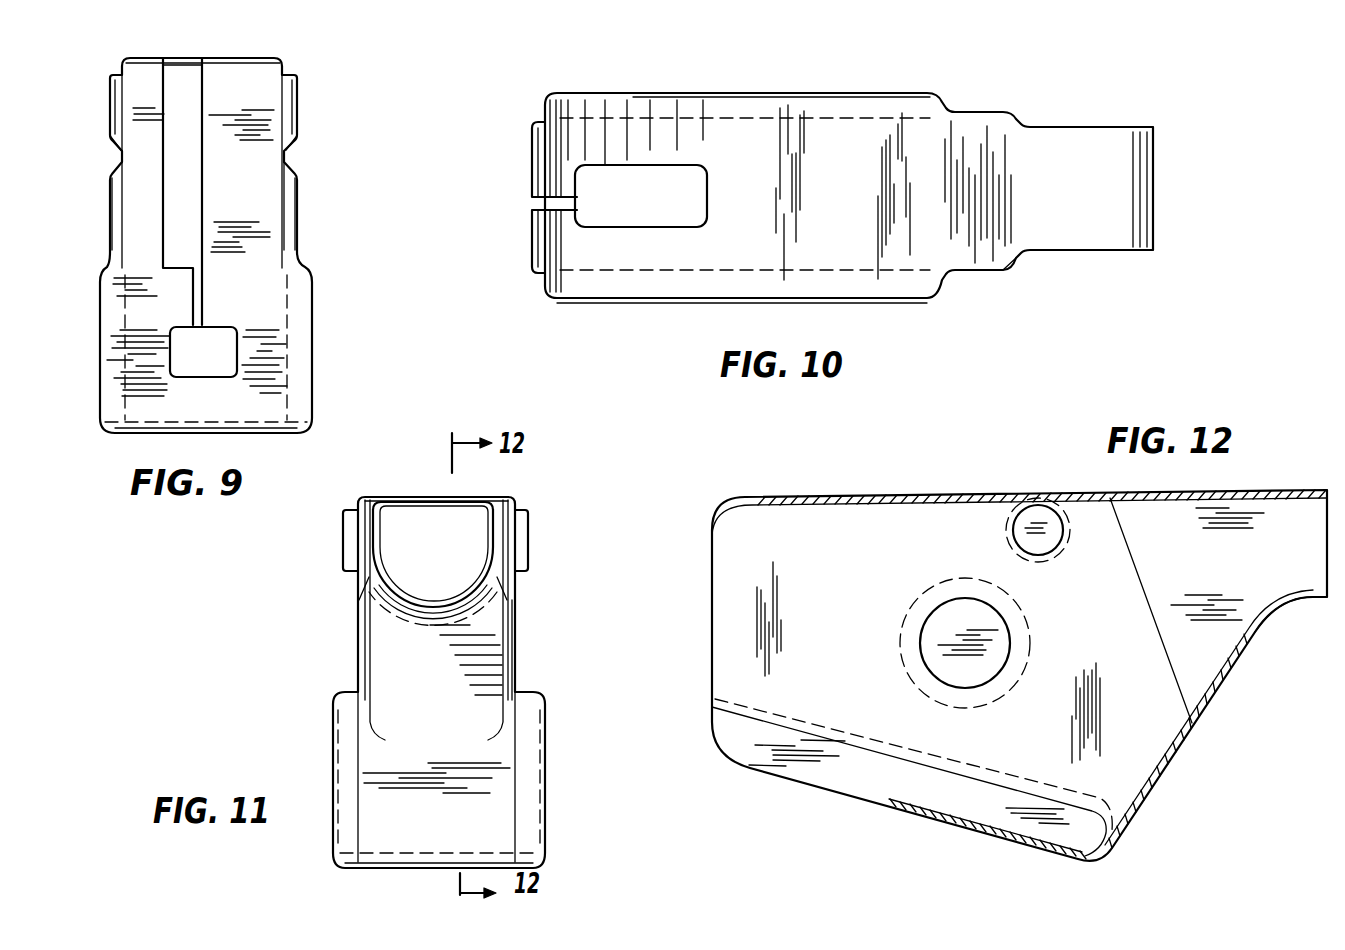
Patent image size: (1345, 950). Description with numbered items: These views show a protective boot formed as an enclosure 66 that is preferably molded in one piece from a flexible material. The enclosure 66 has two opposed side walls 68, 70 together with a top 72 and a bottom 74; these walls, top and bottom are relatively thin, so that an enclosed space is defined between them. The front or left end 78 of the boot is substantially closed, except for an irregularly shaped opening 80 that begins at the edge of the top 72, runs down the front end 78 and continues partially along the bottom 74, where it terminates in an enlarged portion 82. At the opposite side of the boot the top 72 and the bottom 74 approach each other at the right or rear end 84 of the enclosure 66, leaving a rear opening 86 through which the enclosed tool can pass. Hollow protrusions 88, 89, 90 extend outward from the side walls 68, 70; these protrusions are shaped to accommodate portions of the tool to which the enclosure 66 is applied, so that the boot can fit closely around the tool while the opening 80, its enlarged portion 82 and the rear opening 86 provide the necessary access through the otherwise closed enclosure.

In FIG. 9, the enclosure 66 is at (278, 60).
In FIG. 10, the enclosure 66 is at (1111, 110).
In FIG. 11, the enclosure 66 is at (362, 496).
In FIG. 12, the enclosure 66 is at (791, 482).
In FIG. 9, the side wall 68 is at (117, 188).
In FIG. 10, the side wall 68 is at (990, 272).
In FIG. 11, the side wall 68 is at (515, 665).
In FIG. 9, the side wall 70 is at (284, 196).
In FIG. 10, the side wall 70 is at (975, 112).
In FIG. 11, the side wall 70 is at (358, 677).
In FIG. 9, the top 72 is at (238, 52).
In FIG. 11, the top 72 is at (425, 497).
In FIG. 12, the top 72 is at (935, 497).
In FIG. 9, the bottom 74 is at (240, 420).
In FIG. 10, the bottom 74 is at (1066, 209).
In FIG. 11, the bottom 74 is at (430, 868).
In FIG. 12, the bottom 74 is at (960, 830).
In FIG. 9, the front end 78 is at (259, 203).
In FIG. 10, the front end 78 is at (538, 240).
In FIG. 12, the front end 78 is at (712, 610).
In FIG. 9, the irregularly shaped opening 80 is at (193, 92).
In FIG. 12, the irregularly shaped opening 80 is at (730, 673).
In FIG. 9, the enlarged portion 82 is at (225, 358).
In FIG. 10, the enlarged portion 82 is at (598, 183).
In FIG. 12, the enlarged portion 82 is at (843, 778).
In FIG. 10, the rear end 84 is at (1160, 237).
In FIG. 12, the rear end 84 is at (1327, 492).
In FIG. 11, the rear opening 86 is at (458, 522).
In FIG. 12, the rear opening 86 is at (1315, 597).
In FIG. 9, the hollow protrusion 88 is at (112, 88).
In FIG. 11, the hollow protrusion 88 is at (343, 560).
In FIG. 12, the hollow protrusion 88 is at (1040, 530).
In FIG. 9, the hollow protrusion 89 is at (112, 243).
In FIG. 11, the hollow protrusion 89 is at (362, 648).
In FIG. 12, the hollow protrusion 89 is at (990, 652).
In FIG. 9, the hollow protrusion 90 is at (100, 368).
In FIG. 10, the hollow protrusion 90 is at (786, 94).
In FIG. 11, the hollow protrusion 90 is at (333, 737).
In FIG. 12, the hollow protrusion 90 is at (1092, 828).